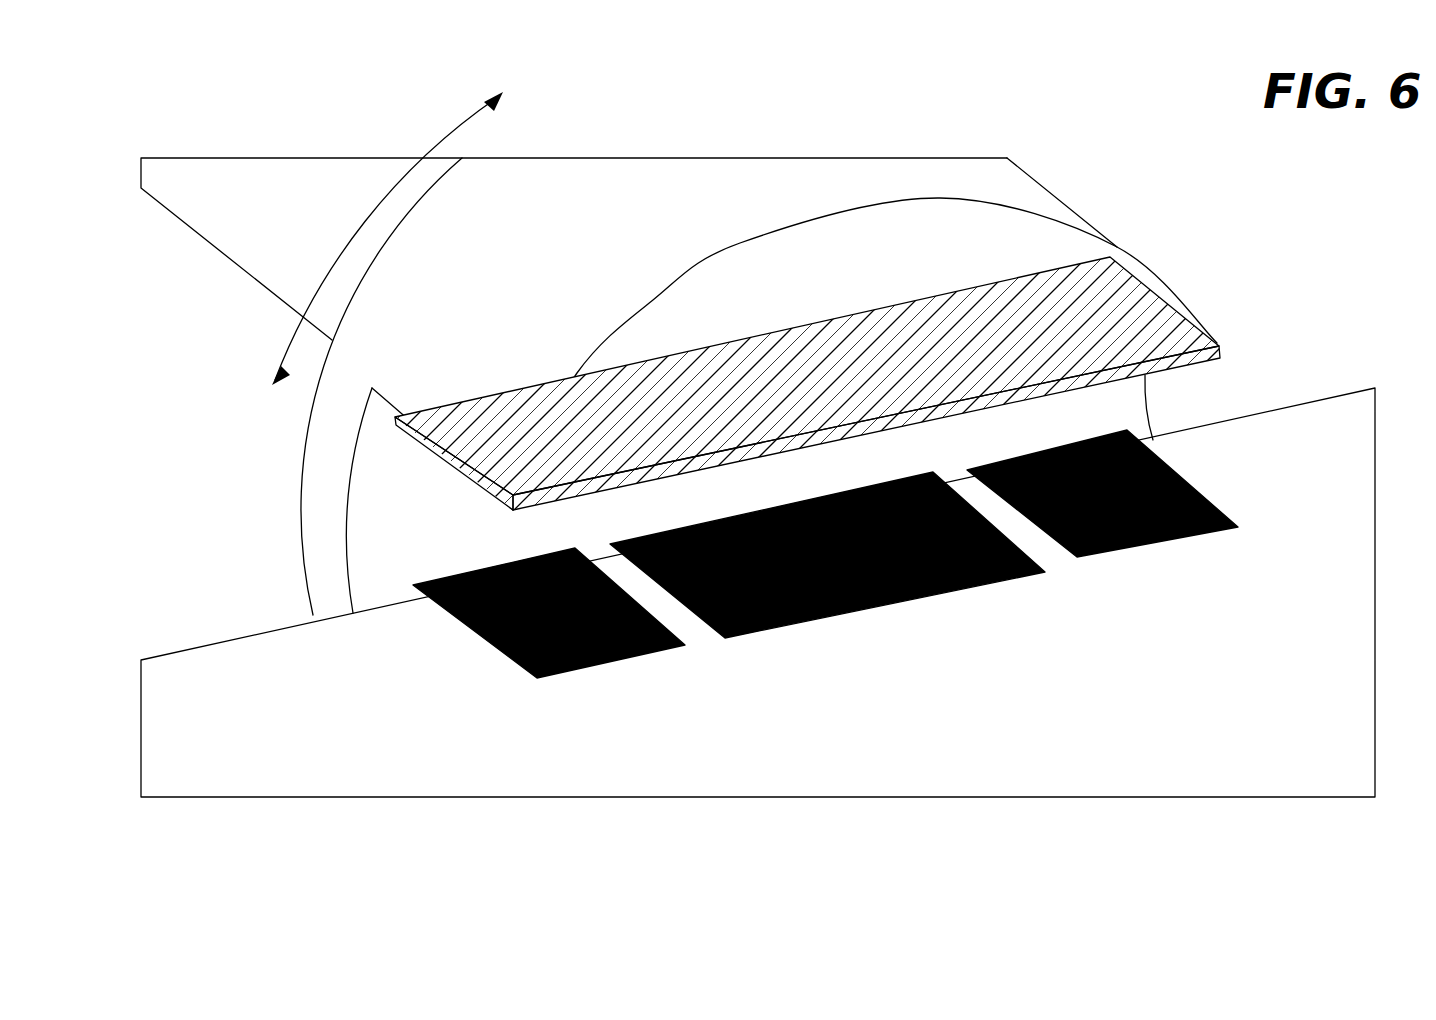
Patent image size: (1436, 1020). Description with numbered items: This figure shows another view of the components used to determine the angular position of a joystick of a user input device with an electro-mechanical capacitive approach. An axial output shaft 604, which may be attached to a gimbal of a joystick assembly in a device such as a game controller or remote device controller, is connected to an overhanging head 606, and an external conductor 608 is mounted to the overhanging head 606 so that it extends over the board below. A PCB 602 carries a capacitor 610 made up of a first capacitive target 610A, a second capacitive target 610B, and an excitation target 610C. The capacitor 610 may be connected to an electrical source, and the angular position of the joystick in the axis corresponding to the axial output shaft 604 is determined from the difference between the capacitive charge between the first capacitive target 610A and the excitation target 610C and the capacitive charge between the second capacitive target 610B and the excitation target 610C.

The PCB 602 is at (1362, 640).
The axial output shaft 604 is at (257, 257).
The overhanging head 606 is at (599, 193).
The external conductor 608 is at (1220, 349).
The capacitor 610 is at (870, 548).
The first capacitive target 610A is at (537, 680).
The second capacitive target 610B is at (1077, 557).
The excitation target 610C is at (725, 638).